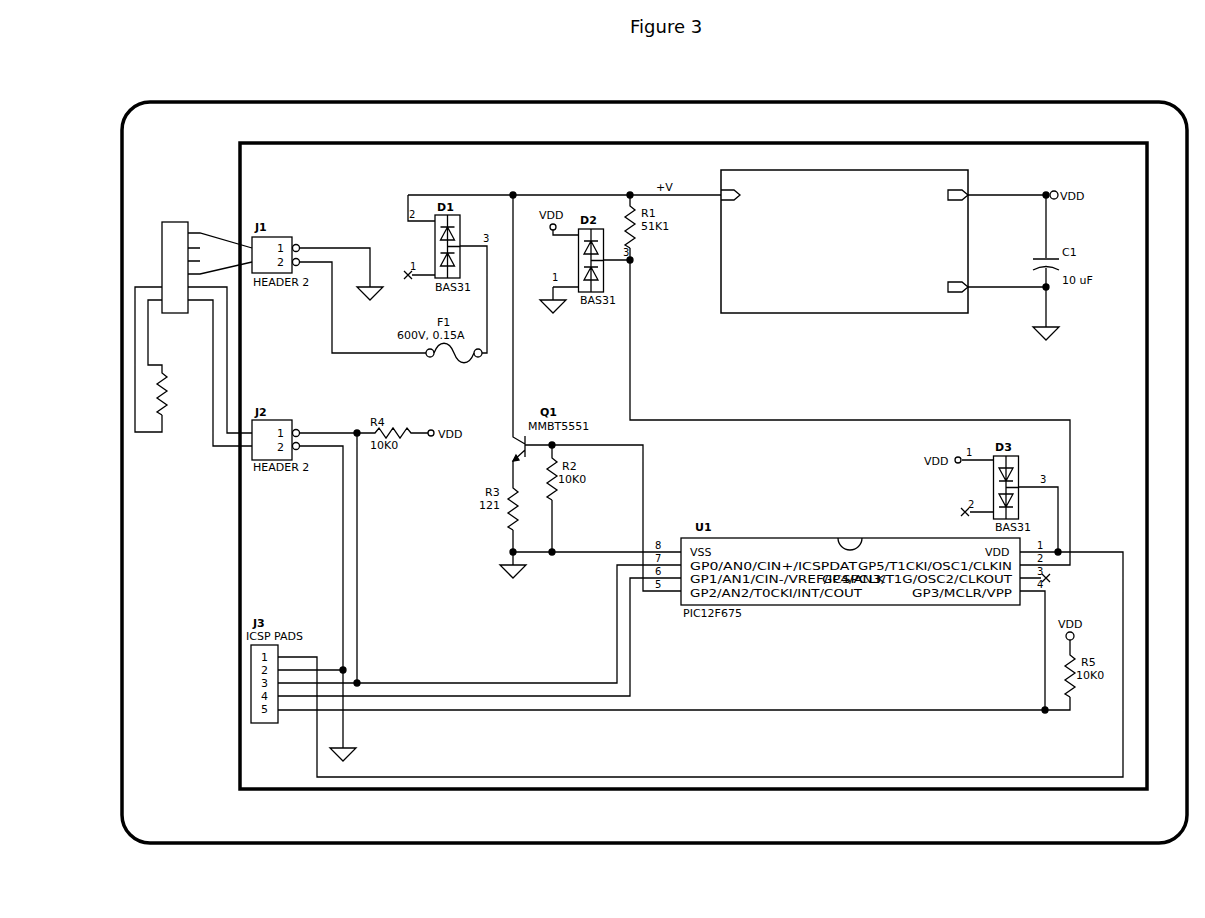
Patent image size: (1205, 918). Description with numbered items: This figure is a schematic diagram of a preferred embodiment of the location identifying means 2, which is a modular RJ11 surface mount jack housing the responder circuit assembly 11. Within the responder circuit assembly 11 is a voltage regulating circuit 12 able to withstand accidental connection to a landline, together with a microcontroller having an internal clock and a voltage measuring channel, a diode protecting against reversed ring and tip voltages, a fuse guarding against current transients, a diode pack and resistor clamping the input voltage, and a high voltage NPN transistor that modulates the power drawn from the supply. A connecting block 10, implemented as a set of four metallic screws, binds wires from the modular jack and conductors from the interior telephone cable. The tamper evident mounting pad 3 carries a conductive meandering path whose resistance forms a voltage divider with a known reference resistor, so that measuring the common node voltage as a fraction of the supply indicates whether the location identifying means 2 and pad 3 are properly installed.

The location identifying means 2 is at (162, 102).
The tamper evident pad 3 is at (155, 393).
The connecting block 10 is at (163, 235).
The responder circuit assembly 11 is at (485, 140).
The voltage regulating circuit 12 is at (722, 170).